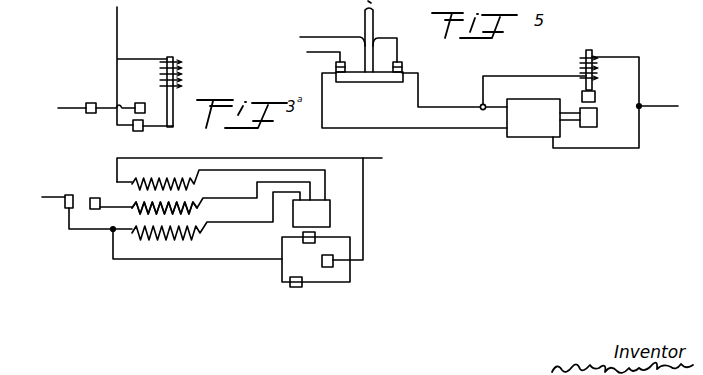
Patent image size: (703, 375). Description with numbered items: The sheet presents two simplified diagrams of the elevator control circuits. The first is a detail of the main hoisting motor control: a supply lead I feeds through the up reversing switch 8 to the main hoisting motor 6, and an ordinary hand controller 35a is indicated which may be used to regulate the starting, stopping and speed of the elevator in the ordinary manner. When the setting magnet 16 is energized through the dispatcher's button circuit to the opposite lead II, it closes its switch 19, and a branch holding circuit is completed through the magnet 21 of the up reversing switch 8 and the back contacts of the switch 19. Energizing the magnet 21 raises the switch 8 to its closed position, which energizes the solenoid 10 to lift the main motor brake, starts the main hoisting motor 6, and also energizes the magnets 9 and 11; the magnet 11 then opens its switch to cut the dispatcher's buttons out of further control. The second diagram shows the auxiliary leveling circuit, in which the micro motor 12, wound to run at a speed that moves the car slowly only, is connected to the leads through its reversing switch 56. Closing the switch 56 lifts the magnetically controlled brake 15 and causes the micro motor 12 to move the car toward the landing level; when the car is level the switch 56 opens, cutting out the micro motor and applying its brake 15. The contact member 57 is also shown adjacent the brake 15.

In FIG. 3A, the magnet of up reversing switch 21 is at (91, 103).
In FIG. 3A, the setting magnet 16 is at (163, 88).
In FIG. 3A, the switch of setting magnet 19 is at (142, 120).
In FIG. 3A, the lead I is at (46, 188).
In FIG. 3A, the lead II is at (239, 166).
In FIG. 3A, the up reversing switch 8 is at (91, 198).
In FIG. 3A, the hand controller 35a is at (189, 209).
In FIG. 3A, the main hoisting motor 6 is at (327, 212).
In FIG. 3A, the solenoid 10 is at (307, 243).
In FIG. 3A, the magnet 9 is at (331, 249).
In FIG. 3A, the magnet 11 is at (299, 288).
In FIG. 5, the micro motor reversing switch 56 is at (351, 51).
In FIG. 5, the micro motor 12 is at (533, 118).
In FIG. 5, the contact strip 57 is at (581, 64).
In FIG. 5, the magnetically controlled brake 15 is at (596, 96).